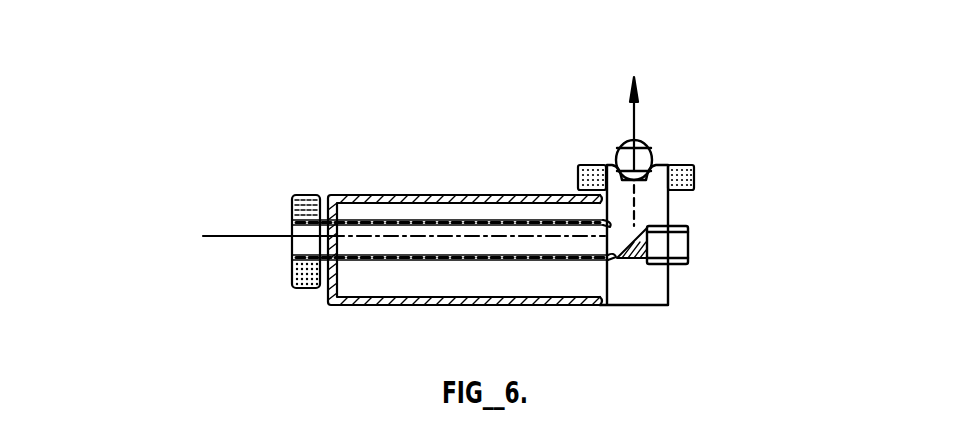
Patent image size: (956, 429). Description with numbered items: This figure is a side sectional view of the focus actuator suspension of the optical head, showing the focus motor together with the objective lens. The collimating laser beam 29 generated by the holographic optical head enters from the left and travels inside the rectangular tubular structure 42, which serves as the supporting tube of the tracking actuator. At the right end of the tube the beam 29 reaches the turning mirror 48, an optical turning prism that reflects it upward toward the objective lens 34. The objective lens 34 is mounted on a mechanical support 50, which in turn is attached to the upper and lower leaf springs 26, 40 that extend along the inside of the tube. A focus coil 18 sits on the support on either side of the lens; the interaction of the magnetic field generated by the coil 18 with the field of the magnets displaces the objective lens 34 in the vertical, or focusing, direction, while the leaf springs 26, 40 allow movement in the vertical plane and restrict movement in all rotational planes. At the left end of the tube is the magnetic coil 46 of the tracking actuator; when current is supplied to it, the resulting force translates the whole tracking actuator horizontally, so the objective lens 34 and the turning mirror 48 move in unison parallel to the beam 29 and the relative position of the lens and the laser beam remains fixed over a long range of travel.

The collimating beam 29 is at (252, 236).
The magnetic coil 46 is at (306, 195).
The leaf spring 26 is at (389, 195).
The objective lens 34 is at (650, 140).
The coil 18 is at (692, 165).
The mechanical support 50 is at (668, 205).
The turning mirror 48 is at (648, 243).
The leaf spring 40 is at (468, 305).
The rectangular tubular structure 42 is at (372, 258).